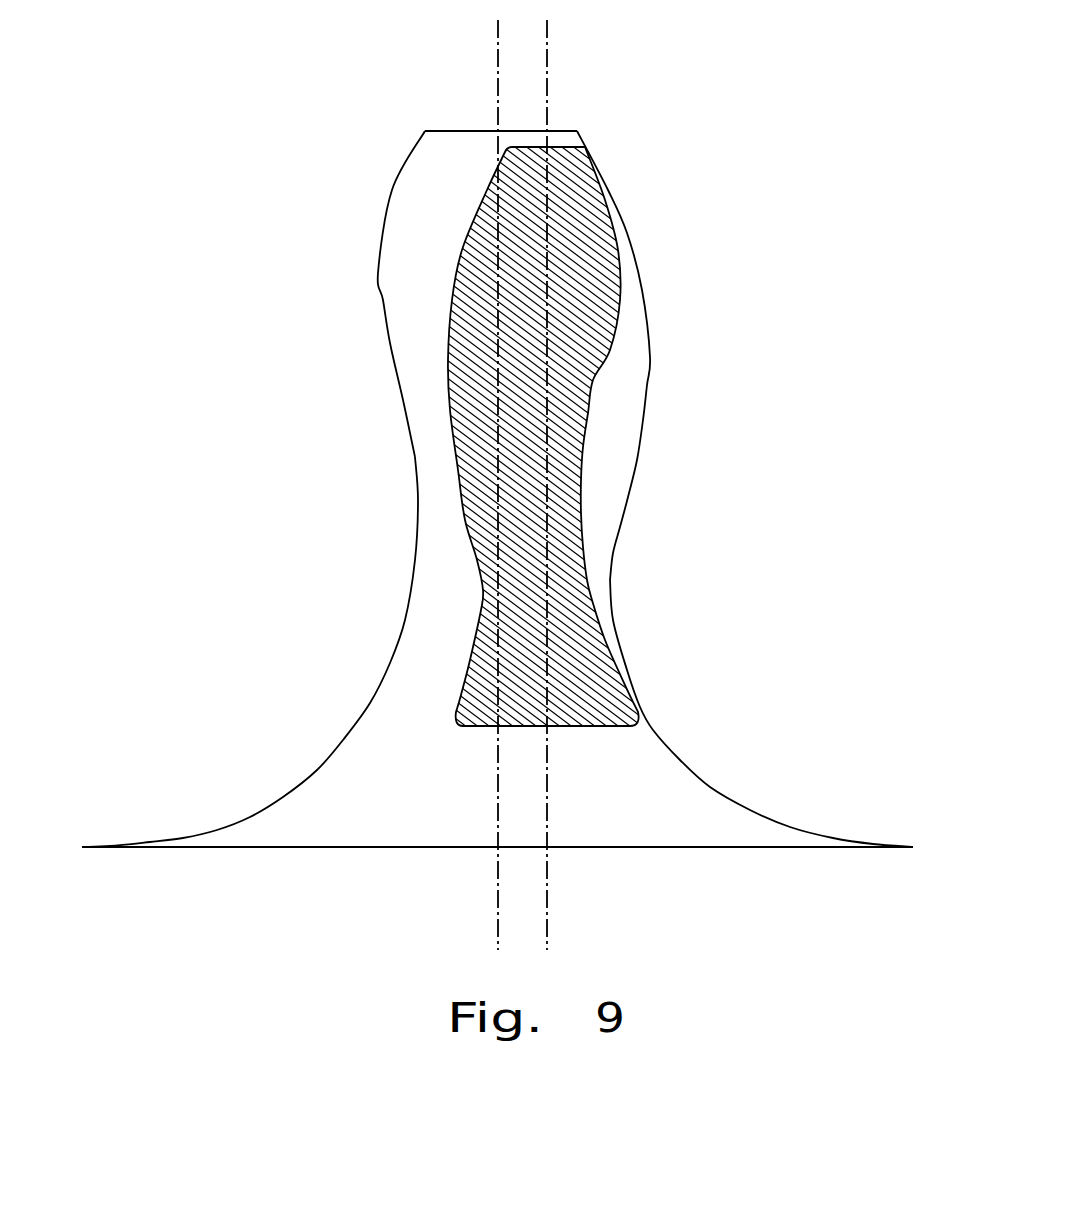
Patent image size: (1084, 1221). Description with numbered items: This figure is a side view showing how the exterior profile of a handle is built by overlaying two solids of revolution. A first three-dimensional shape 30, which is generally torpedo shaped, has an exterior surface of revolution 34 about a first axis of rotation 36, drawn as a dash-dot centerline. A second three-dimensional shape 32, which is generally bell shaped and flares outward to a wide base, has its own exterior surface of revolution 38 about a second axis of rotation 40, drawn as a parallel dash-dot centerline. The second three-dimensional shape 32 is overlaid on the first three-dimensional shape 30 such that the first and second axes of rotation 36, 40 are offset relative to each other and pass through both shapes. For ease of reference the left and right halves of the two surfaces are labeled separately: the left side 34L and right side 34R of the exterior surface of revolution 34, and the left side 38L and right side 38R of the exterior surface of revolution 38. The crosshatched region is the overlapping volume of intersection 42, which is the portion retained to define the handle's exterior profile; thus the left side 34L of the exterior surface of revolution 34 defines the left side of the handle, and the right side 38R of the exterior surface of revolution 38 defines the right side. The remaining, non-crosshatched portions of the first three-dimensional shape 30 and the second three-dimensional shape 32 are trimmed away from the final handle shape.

The first three-dimensional shape 30 is at (591, 453).
The second three-dimensional shape 32 is at (699, 849).
The exterior surface of revolution 34 is at (527, 355).
The left side of the exterior surface of revolution 34L is at (450, 323).
The right side of the exterior surface of revolution 34R is at (645, 404).
The first axis of rotation 36 is at (548, 62).
The exterior surface of revolution 38 is at (497, 652).
The left side of the exterior surface of revolution 38L is at (415, 457).
The right side of the exterior surface of revolution 38R is at (580, 501).
The second axis of rotation 40 is at (498, 52).
The volume of intersection 42 is at (587, 202).